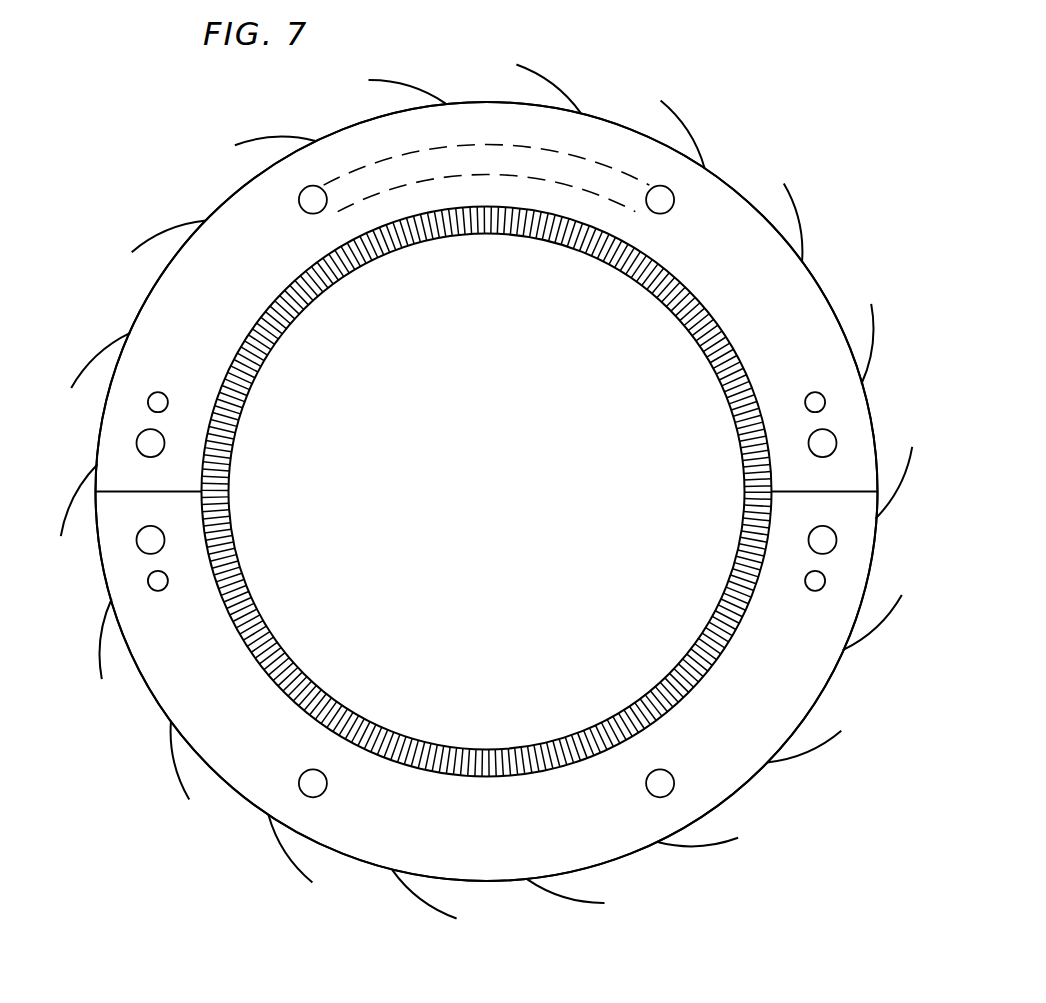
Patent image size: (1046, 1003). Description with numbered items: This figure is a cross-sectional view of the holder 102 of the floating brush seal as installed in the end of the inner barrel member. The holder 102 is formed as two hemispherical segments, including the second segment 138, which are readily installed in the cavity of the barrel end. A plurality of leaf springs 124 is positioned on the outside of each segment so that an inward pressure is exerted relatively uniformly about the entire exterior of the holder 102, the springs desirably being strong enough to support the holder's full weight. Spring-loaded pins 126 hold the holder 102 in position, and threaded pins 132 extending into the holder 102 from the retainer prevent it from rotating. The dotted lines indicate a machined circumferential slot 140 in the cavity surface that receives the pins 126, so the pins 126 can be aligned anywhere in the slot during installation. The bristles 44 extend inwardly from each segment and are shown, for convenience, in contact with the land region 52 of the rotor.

The holder 102 is at (825, 293).
The second segment 138 is at (231, 300).
The bristles 44 is at (727, 367).
The land region 52 is at (233, 437).
The circumferential slot 140 is at (357, 163).
The spring-loaded pins 126 is at (300, 196).
The threaded pins 132 is at (160, 392).
The leaf springs 124 is at (395, 83).